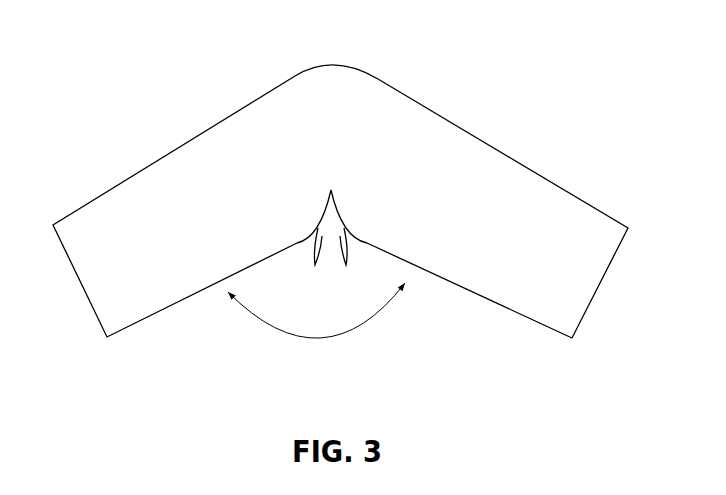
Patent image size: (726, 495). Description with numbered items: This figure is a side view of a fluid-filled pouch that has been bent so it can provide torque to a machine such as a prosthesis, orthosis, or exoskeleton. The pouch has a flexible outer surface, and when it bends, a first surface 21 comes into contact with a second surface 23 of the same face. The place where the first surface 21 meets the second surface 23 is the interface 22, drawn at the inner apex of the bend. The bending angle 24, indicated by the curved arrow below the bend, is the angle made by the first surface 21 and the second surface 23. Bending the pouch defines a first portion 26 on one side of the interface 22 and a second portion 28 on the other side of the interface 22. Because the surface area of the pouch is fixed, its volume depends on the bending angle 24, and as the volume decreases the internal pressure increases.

The first surface 21 is at (315, 265).
The interface 22 is at (333, 195).
The second surface 23 is at (346, 265).
The bending angle 24 is at (316, 330).
The first portion 26 is at (168, 202).
The second portion 28 is at (530, 218).